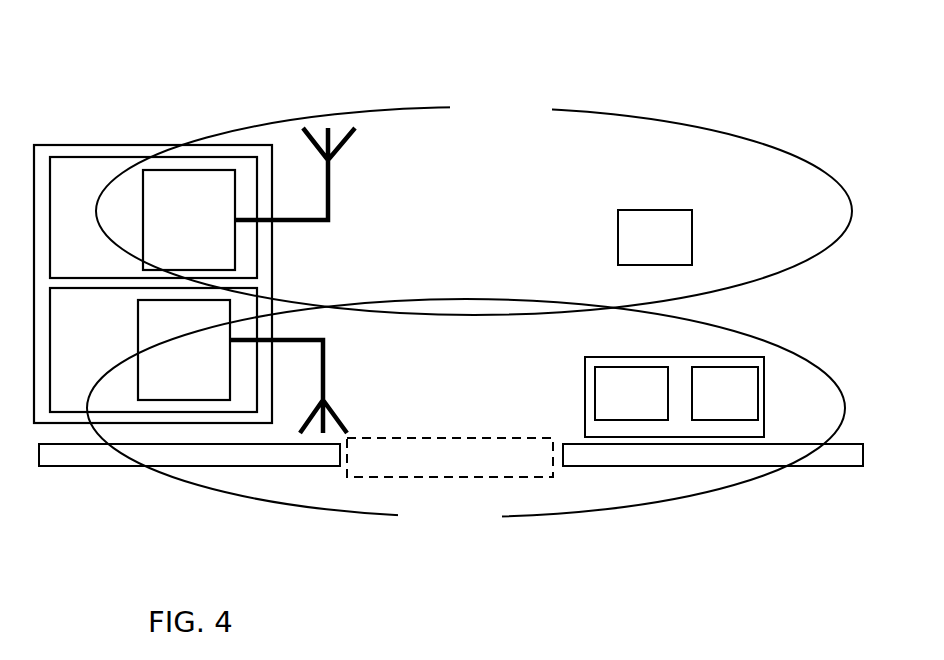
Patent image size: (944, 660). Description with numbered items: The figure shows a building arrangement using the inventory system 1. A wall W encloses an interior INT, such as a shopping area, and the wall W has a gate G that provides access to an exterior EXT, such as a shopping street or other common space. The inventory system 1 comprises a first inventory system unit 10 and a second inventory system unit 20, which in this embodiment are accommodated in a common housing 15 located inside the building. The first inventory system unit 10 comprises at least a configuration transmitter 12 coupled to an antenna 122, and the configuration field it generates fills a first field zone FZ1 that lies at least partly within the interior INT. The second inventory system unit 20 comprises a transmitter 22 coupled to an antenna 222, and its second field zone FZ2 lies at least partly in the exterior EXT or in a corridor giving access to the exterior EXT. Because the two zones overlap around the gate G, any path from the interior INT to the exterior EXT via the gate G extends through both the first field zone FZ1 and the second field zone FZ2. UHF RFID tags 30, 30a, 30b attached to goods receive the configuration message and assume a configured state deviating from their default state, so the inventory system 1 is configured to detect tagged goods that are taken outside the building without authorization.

The inventory system 1 is at (138, 524).
The common housing 15 is at (124, 141).
The first inventory system unit 10 is at (98, 218).
The configuration transmitter 12 is at (175, 232).
The antenna of the first inventory system unit 122 is at (341, 182).
The second inventory system unit 20 is at (69, 350).
The second inventory system unit transmitter 22 is at (172, 364).
The antenna of the second inventory system unit 222 is at (334, 378).
The UHF RFID tag 30 is at (655, 237).
The UHF RFID tag 30a is at (631, 393).
The UHF RFID tag 30b is at (725, 393).
The gate G is at (444, 437).
The wall W is at (763, 464).
The first field zone FZ1 is at (521, 112).
The second field zone FZ2 is at (471, 534).
The interior INT is at (822, 424).
The exterior EXT is at (865, 514).